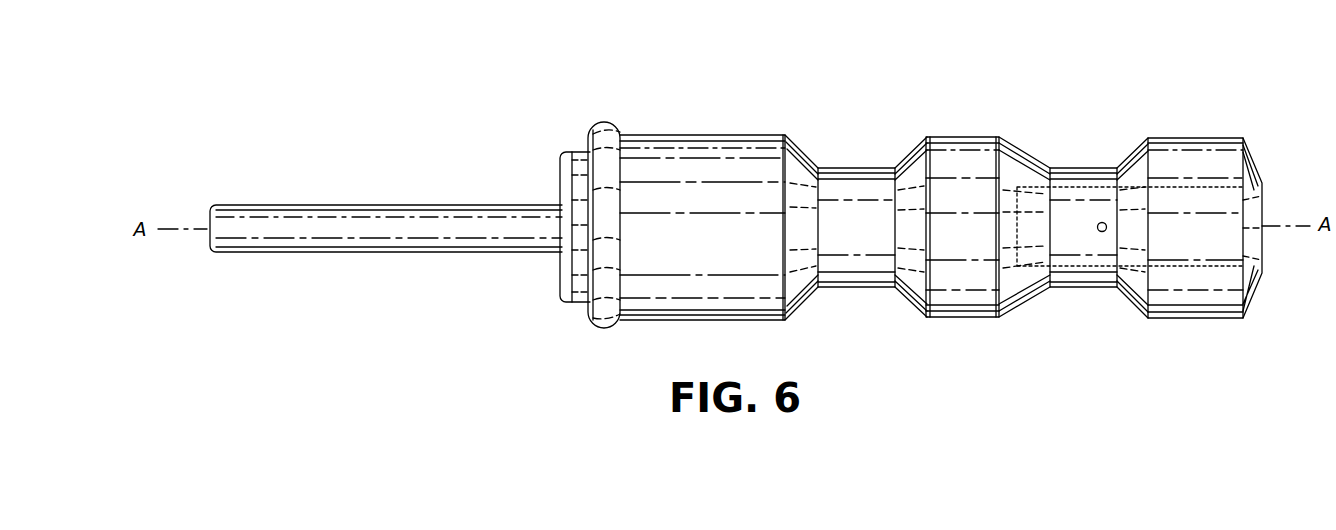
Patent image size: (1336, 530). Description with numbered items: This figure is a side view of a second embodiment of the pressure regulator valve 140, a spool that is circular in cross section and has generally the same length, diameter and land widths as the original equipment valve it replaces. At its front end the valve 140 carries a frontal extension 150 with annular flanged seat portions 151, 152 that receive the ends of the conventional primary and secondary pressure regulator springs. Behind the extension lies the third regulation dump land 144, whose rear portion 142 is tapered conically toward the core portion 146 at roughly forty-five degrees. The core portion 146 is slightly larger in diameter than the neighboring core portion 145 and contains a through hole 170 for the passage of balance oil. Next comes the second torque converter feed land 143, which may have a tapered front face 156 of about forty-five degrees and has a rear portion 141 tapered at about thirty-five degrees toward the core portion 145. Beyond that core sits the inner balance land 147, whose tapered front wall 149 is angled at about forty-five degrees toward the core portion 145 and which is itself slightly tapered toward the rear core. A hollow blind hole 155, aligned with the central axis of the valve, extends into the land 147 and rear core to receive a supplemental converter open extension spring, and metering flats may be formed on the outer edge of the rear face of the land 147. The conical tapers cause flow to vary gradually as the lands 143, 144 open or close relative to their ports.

The pressure regulator valve 140 is at (886, 200).
The frontal extension 150 is at (410, 205).
The annular flanged seat portion 152 is at (560, 276).
The annular flanged seat portion 151 is at (587, 122).
The third regulation dump land 144 is at (698, 135).
The rear portion of third regulation dump land 142 is at (803, 302).
The core portion 146 is at (853, 168).
The tapered front face 156 is at (903, 298).
The second torque converter feed land 143 is at (955, 137).
The rear portion of second torque converter feed land 141 is at (1037, 300).
The core portion 145 is at (1085, 168).
The tapered front wall 149 is at (1125, 300).
The inner balance land 147 is at (1198, 138).
The through hole 170 is at (1102, 222).
The hollow blind hole 155 is at (1215, 186).